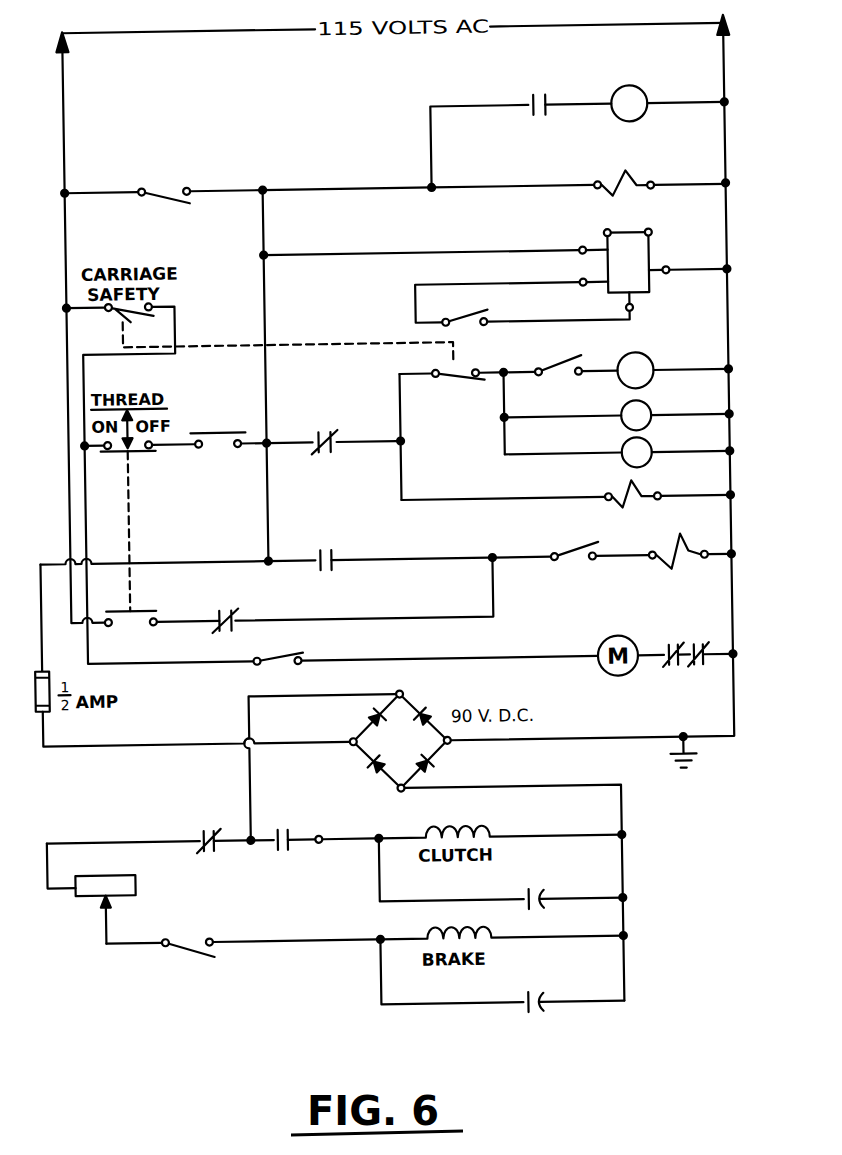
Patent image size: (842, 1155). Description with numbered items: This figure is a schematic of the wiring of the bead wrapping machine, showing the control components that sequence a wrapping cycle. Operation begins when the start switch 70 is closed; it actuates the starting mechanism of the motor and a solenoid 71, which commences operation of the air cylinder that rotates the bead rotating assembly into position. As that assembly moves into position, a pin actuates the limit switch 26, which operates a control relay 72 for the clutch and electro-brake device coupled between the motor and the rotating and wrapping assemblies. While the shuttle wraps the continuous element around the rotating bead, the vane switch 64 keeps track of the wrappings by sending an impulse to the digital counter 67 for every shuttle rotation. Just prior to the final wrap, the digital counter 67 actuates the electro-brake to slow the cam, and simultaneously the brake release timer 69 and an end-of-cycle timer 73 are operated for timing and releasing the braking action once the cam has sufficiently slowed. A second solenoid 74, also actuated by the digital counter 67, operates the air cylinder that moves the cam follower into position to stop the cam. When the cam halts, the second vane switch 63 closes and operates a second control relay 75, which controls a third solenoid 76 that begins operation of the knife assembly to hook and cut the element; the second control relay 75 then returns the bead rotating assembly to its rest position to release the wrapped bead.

The limit switch 26 is at (560, 364).
The second vane switch 63 is at (481, 318).
The vane switch 64 is at (580, 549).
The digital counter 67 is at (545, 96).
The brake release timer 69 is at (647, 414).
The start switch 70 is at (222, 430).
The solenoid 71 is at (641, 183).
The control relay 72 is at (642, 368).
The end-of-cycle timer 73 is at (167, 190).
The second solenoid 74 is at (642, 496).
The second control relay 75 is at (641, 96).
The third solenoid 76 is at (668, 570).